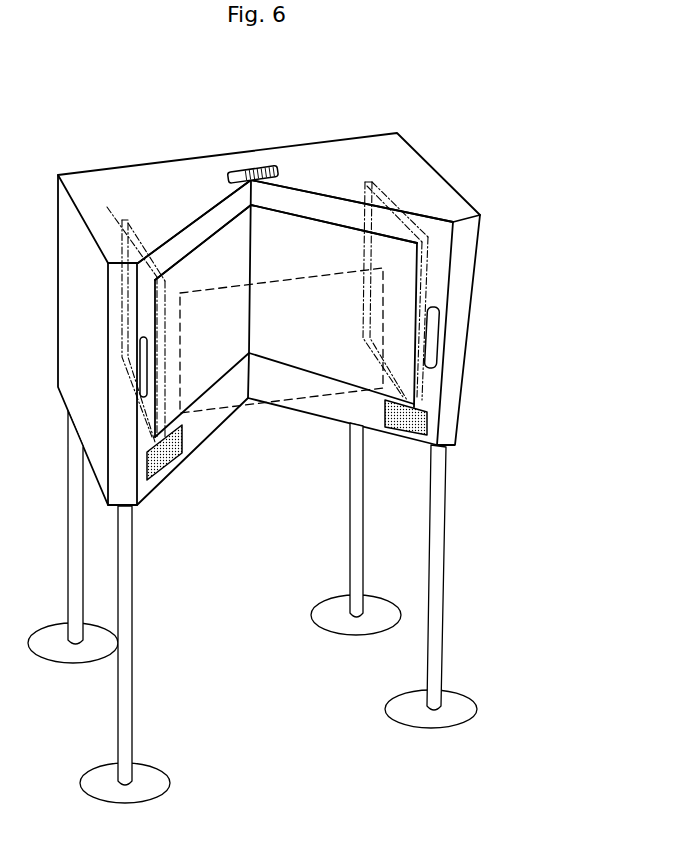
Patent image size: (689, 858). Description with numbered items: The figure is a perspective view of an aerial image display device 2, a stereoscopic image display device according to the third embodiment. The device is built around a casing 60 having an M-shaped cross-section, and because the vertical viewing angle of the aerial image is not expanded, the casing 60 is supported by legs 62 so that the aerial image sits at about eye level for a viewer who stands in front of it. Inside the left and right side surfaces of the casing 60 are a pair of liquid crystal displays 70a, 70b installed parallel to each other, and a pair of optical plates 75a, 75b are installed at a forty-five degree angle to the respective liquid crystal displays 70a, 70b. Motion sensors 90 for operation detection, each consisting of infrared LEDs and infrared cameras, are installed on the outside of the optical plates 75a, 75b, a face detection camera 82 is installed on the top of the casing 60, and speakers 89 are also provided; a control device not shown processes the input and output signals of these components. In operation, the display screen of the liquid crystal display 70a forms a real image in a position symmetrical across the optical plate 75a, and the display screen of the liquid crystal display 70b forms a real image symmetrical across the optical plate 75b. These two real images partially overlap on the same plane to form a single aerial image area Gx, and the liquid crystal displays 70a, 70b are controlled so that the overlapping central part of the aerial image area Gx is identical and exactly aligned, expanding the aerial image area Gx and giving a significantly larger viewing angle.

The aerial image display device 2 is at (195, 108).
The casing 60 is at (495, 192).
The legs 62 is at (133, 710).
The liquid crystal display 70a is at (121, 312).
The liquid crystal display 70b is at (394, 196).
The optical plate 75a is at (213, 250).
The optical plate 75b is at (290, 230).
The face detection camera 82 is at (277, 171).
The speakers 89 is at (158, 465).
The motion sensors 90 is at (140, 363).
The aerial image area Gx is at (305, 402).